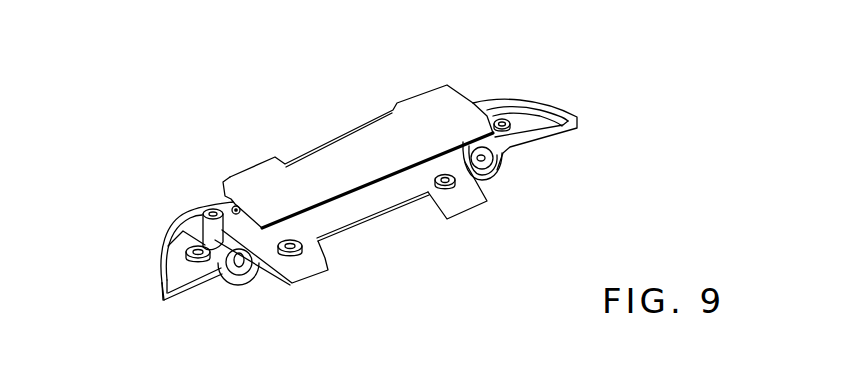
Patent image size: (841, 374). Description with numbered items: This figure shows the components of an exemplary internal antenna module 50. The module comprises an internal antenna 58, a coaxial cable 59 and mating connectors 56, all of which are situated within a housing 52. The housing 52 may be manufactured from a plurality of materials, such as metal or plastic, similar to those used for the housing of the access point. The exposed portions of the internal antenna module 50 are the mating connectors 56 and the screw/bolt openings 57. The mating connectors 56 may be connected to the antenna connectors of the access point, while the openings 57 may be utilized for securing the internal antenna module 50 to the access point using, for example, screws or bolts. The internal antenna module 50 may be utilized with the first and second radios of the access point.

The internal antenna module 50 is at (547, 82).
The housing 52 is at (157, 283).
The mating connectors 56 is at (241, 290).
The screw/bolt openings 57 is at (306, 255).
The internal antenna 58 is at (253, 167).
The coaxial cable 59 is at (200, 208).